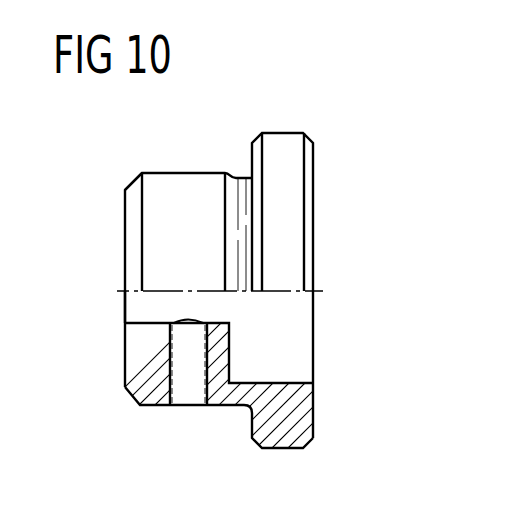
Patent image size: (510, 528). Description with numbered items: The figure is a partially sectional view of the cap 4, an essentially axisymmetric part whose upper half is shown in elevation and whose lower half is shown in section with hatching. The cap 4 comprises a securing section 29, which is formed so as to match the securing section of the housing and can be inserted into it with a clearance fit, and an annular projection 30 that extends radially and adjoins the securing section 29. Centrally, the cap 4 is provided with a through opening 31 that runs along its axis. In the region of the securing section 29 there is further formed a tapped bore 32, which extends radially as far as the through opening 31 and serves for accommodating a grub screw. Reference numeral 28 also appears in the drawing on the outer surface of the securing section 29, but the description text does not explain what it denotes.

The cap 4 is at (356, 122).
The sleeve body 28 is at (185, 185).
The securing section 29 is at (133, 240).
The annular projection 30 is at (283, 143).
The through opening 31 is at (140, 305).
The tapped bore 32 is at (192, 387).